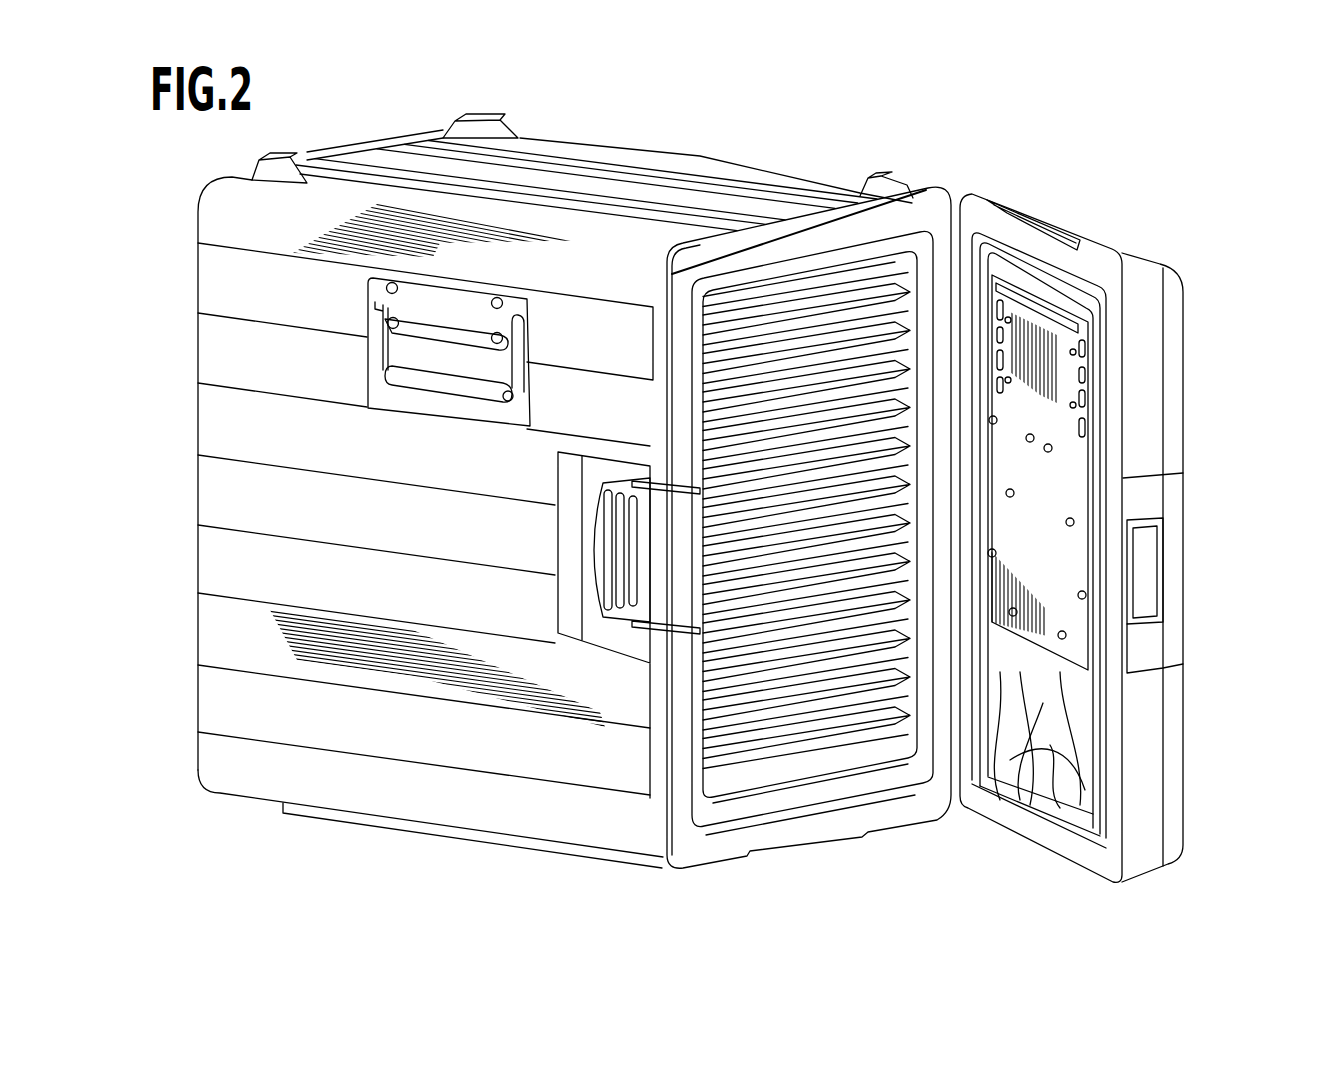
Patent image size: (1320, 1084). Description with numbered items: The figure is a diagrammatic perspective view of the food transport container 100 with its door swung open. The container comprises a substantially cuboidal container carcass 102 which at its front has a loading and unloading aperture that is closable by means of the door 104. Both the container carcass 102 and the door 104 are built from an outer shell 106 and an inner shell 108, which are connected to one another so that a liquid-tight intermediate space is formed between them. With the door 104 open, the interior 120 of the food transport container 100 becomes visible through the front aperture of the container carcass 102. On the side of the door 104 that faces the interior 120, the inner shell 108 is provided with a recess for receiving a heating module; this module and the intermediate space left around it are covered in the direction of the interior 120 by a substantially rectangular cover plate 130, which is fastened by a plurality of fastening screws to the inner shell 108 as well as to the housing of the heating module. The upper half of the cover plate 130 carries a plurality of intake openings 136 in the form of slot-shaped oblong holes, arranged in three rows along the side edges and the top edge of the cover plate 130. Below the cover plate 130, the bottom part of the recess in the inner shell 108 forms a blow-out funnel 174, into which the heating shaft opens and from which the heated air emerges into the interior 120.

The food transport container 100 is at (807, 162).
The container carcass 102 is at (573, 173).
The door 104 is at (1050, 247).
The outer shell 106 is at (488, 745).
The inner shell 108 is at (853, 737).
The interior 120 is at (807, 500).
The cover plate 130 is at (1057, 565).
The intake openings 136 is at (1081, 355).
The blow-out funnel 174 is at (1043, 703).